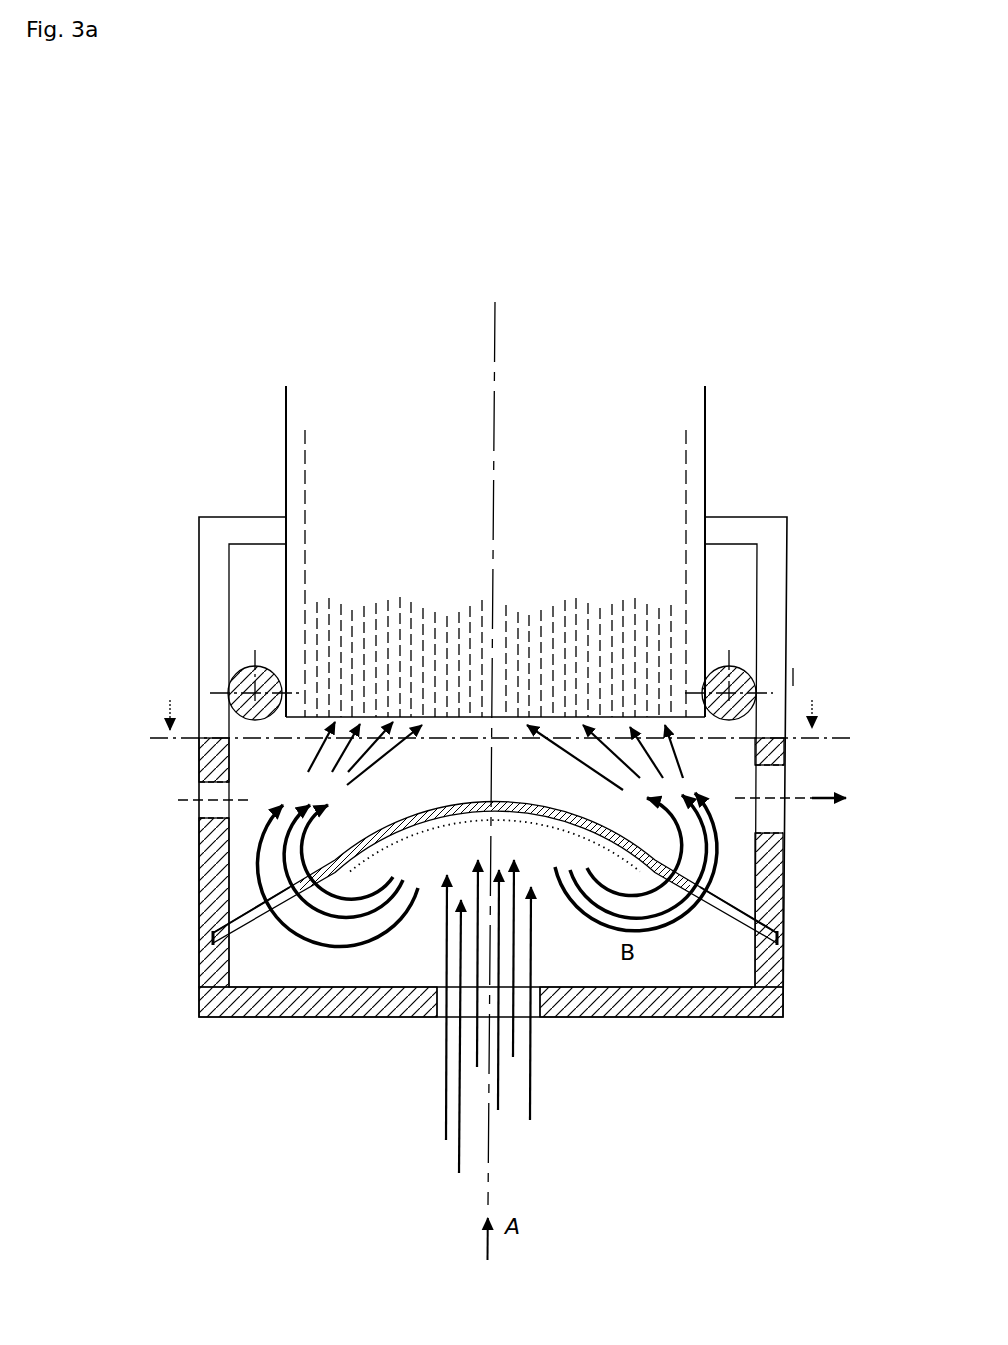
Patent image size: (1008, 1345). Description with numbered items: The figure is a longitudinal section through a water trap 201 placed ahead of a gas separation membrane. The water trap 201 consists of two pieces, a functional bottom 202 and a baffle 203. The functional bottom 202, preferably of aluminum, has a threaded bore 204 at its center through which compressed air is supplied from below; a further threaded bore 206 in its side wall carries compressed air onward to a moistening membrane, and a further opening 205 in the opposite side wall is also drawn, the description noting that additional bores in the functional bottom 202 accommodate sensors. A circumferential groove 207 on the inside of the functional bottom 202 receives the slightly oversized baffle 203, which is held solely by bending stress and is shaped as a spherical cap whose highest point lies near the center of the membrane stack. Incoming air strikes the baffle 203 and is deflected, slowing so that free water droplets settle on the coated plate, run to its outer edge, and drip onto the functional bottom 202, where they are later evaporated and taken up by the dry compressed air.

The water trap 201 is at (198, 928).
The functional bottom 202 is at (367, 1010).
The baffle 203 is at (377, 868).
The threaded bore 204 is at (428, 1032).
The outlet port 205 is at (197, 802).
The threaded bore 206 is at (784, 800).
The circumferential groove 207 is at (768, 943).